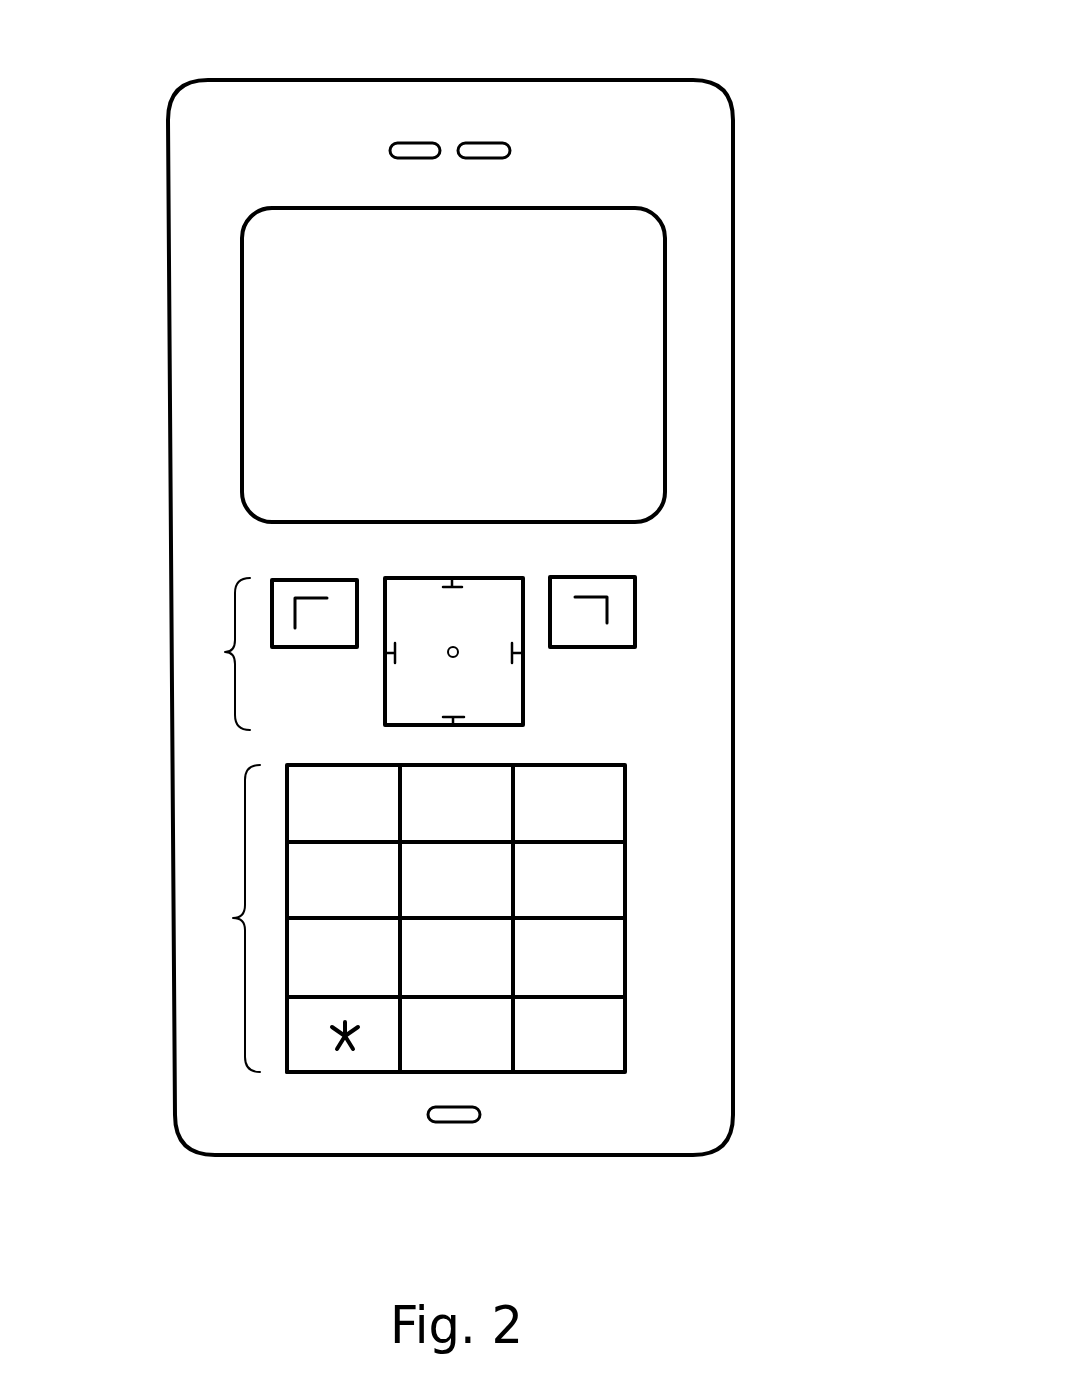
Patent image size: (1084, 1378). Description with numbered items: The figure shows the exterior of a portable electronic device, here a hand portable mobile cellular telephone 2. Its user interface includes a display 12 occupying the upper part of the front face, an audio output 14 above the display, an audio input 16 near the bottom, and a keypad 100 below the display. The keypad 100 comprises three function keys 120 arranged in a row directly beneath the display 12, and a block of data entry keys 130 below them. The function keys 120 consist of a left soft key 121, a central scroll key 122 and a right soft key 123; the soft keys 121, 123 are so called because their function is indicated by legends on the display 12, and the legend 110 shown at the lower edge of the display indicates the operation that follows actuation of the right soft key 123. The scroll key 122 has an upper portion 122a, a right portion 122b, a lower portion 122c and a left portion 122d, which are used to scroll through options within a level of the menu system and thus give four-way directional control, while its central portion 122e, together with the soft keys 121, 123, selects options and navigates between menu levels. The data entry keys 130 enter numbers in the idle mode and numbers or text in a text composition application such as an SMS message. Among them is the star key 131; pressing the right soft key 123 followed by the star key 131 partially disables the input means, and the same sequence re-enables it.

The portable electronic device 2 is at (793, 156).
The display 12 is at (632, 345).
The audio output 14 is at (520, 50).
The audio input 16 is at (458, 1122).
The keypad 100 is at (736, 787).
The legend 110 is at (630, 497).
The function keys 120 is at (225, 652).
The left soft key 121 is at (288, 578).
The scroll key 122 is at (453, 578).
The upper portion 122a is at (398, 578).
The right portion 122b is at (523, 652).
The lower portion 122c is at (453, 727).
The left portion 122d is at (385, 653).
The central portion 122e is at (455, 645).
The right soft key 123 is at (635, 605).
The data entry keys 130 is at (232, 918).
The star key 131 is at (285, 1068).